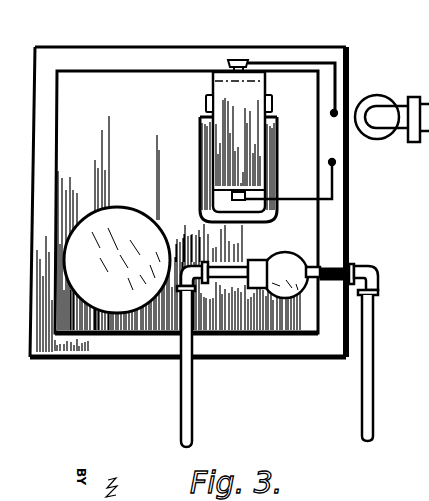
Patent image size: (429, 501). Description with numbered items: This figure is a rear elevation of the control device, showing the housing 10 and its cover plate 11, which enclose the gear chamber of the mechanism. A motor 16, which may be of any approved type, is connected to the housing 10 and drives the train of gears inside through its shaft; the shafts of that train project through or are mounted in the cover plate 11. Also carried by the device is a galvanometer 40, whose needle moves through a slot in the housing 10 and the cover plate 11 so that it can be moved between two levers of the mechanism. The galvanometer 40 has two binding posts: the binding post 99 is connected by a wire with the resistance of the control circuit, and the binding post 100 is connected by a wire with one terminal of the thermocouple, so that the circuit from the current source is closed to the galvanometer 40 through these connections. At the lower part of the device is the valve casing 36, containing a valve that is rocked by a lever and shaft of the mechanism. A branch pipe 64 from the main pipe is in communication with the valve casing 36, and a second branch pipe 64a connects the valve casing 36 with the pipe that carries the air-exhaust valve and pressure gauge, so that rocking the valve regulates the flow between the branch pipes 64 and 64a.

The housing 10 is at (165, 83).
The cover plate 11 is at (320, 56).
The motor 16 is at (122, 222).
The valve casing 36 is at (278, 286).
The galvanometer 40 is at (255, 152).
The branch pipe 64 is at (185, 415).
The branch pipe 64a is at (366, 394).
The binding post 99 is at (336, 111).
The binding post 100 is at (337, 163).